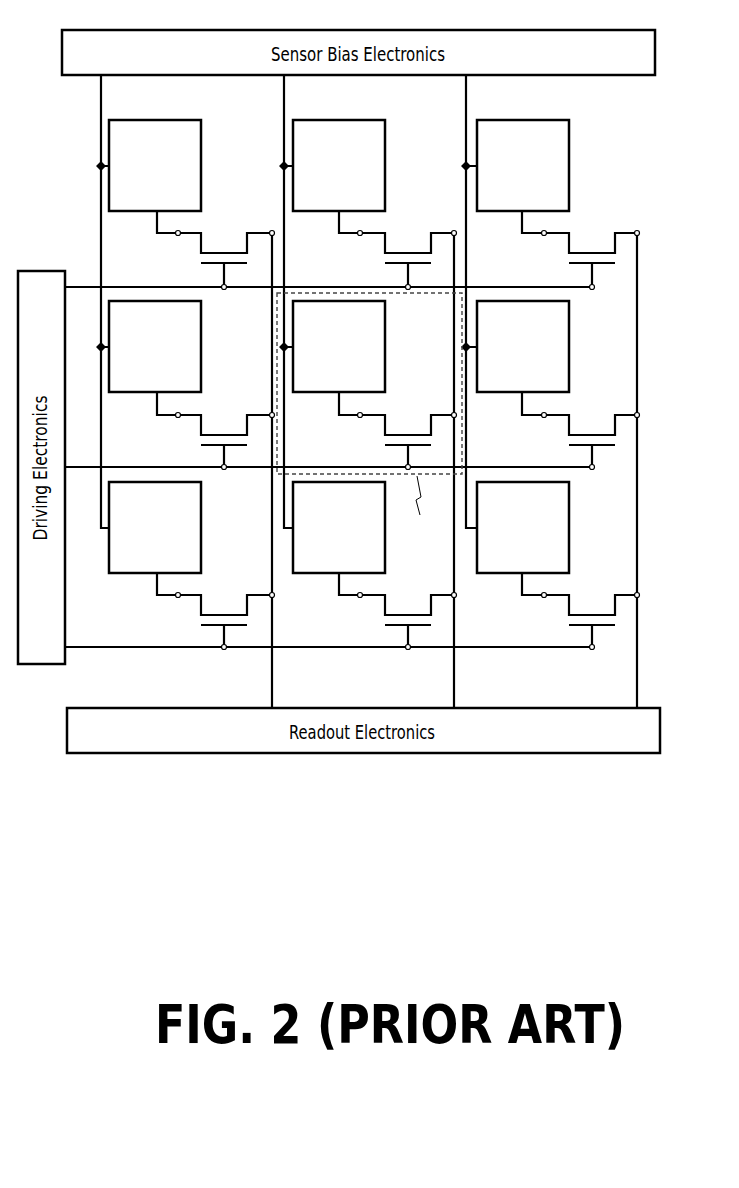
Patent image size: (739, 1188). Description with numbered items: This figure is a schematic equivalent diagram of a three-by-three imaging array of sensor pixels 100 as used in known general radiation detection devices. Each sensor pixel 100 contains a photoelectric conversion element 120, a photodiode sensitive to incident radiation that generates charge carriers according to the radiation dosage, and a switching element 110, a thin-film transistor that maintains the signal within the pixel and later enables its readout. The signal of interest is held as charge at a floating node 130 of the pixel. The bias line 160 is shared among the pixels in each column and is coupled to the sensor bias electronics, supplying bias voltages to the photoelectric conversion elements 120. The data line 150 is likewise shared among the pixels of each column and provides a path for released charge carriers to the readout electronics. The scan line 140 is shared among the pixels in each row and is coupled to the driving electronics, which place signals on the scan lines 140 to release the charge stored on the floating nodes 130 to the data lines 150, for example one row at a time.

The sensor pixel 100 is at (369, 419).
The switching element 110 is at (596, 214).
The photoelectric conversion element 120 is at (193, 346).
The floating node 130 is at (158, 598).
The scan line 140 is at (83, 284).
The data line 150 is at (271, 692).
The bias line 160 is at (285, 110).